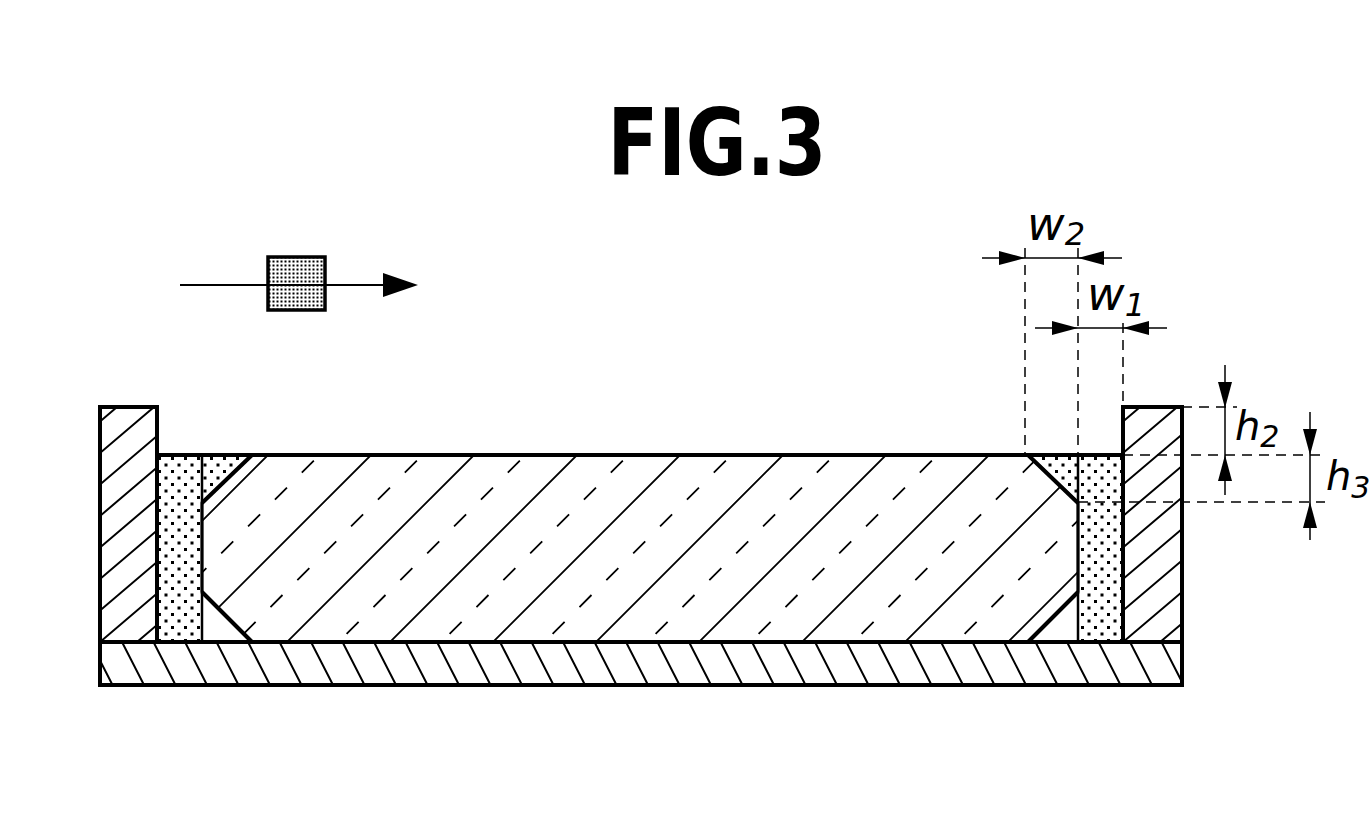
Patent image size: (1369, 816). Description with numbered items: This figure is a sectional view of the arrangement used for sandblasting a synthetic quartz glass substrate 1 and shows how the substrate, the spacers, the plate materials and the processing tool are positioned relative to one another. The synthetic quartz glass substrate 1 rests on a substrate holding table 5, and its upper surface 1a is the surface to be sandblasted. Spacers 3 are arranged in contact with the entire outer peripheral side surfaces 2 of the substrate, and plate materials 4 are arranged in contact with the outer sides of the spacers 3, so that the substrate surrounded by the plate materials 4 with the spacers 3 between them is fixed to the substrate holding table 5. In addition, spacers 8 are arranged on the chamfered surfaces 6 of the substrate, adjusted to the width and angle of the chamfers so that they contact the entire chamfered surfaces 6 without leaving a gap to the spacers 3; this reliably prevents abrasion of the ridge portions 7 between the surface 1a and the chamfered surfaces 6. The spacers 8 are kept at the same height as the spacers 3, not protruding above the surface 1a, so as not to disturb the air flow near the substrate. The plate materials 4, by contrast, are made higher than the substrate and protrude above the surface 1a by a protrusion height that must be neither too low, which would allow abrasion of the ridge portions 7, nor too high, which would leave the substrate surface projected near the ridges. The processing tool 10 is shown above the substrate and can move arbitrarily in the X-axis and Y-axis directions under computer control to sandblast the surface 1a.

The synthetic quartz glass substrate 1 is at (658, 502).
The surface of the synthetic quartz glass substrate 1a is at (488, 453).
The outer peripheral side surfaces 2 is at (1077, 557).
The spacers 3 is at (1095, 467).
The plate materials 4 is at (1143, 417).
The substrate holding table 5 is at (1153, 664).
The chamfered surfaces 6 is at (219, 457).
The ridge portions 7 is at (248, 455).
The spacers on the chamfered surfaces 8 is at (212, 470).
The processing tool 10 is at (295, 273).